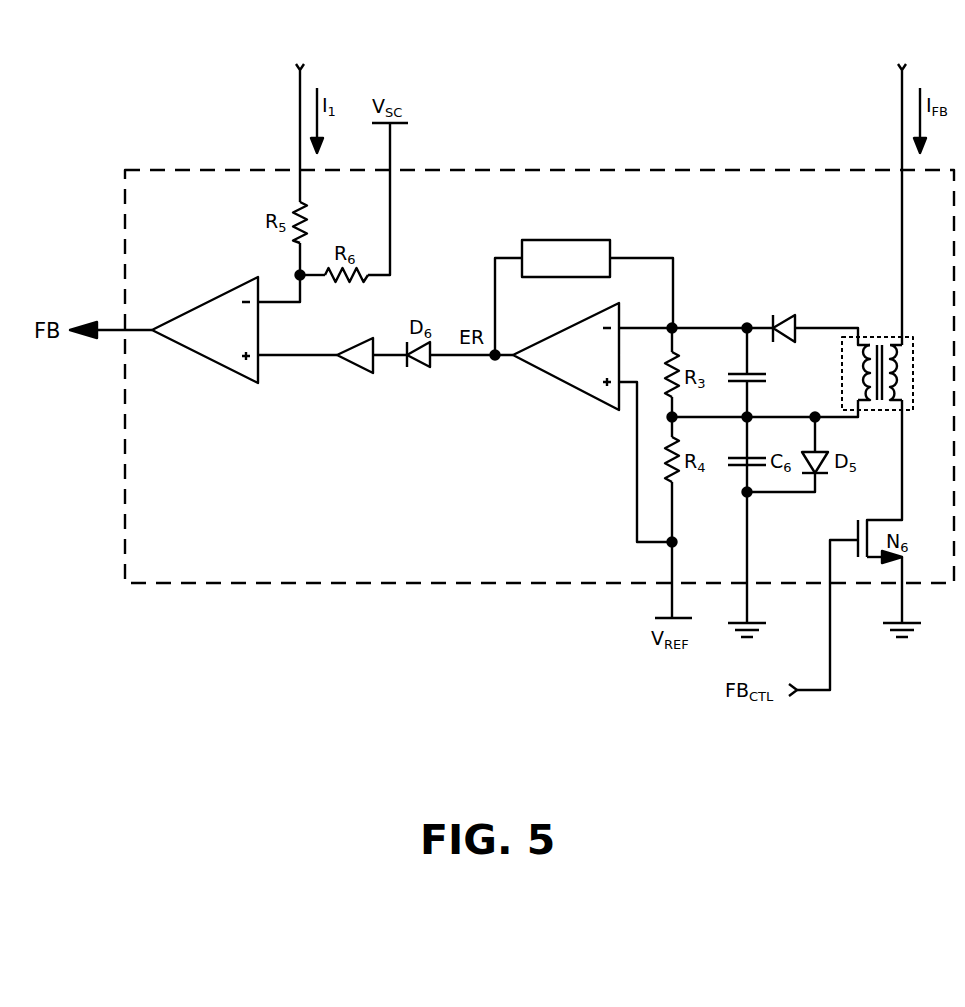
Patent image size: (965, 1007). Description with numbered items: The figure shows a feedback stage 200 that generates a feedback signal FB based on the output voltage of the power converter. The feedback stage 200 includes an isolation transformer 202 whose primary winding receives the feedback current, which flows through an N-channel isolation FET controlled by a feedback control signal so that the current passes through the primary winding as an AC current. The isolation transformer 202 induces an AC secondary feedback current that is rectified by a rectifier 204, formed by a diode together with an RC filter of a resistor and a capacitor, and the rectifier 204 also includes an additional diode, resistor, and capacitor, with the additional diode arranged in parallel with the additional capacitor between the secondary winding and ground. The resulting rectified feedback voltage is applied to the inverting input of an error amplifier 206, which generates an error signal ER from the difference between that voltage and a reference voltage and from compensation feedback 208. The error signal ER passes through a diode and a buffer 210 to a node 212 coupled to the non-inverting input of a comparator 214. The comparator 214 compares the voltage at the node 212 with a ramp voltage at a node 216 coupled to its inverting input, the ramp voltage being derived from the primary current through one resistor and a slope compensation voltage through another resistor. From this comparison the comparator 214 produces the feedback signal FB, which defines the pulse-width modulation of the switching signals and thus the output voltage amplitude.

The feedback stage 200 is at (165, 170).
The isolation transformer 202 is at (880, 337).
The rectifier 204 is at (750, 262).
The error amplifier 206 is at (582, 393).
The compensation feedback 208 is at (556, 240).
The buffer 210 is at (350, 375).
The node 212 is at (311, 334).
The comparator 214 is at (220, 365).
The node 216 is at (284, 262).